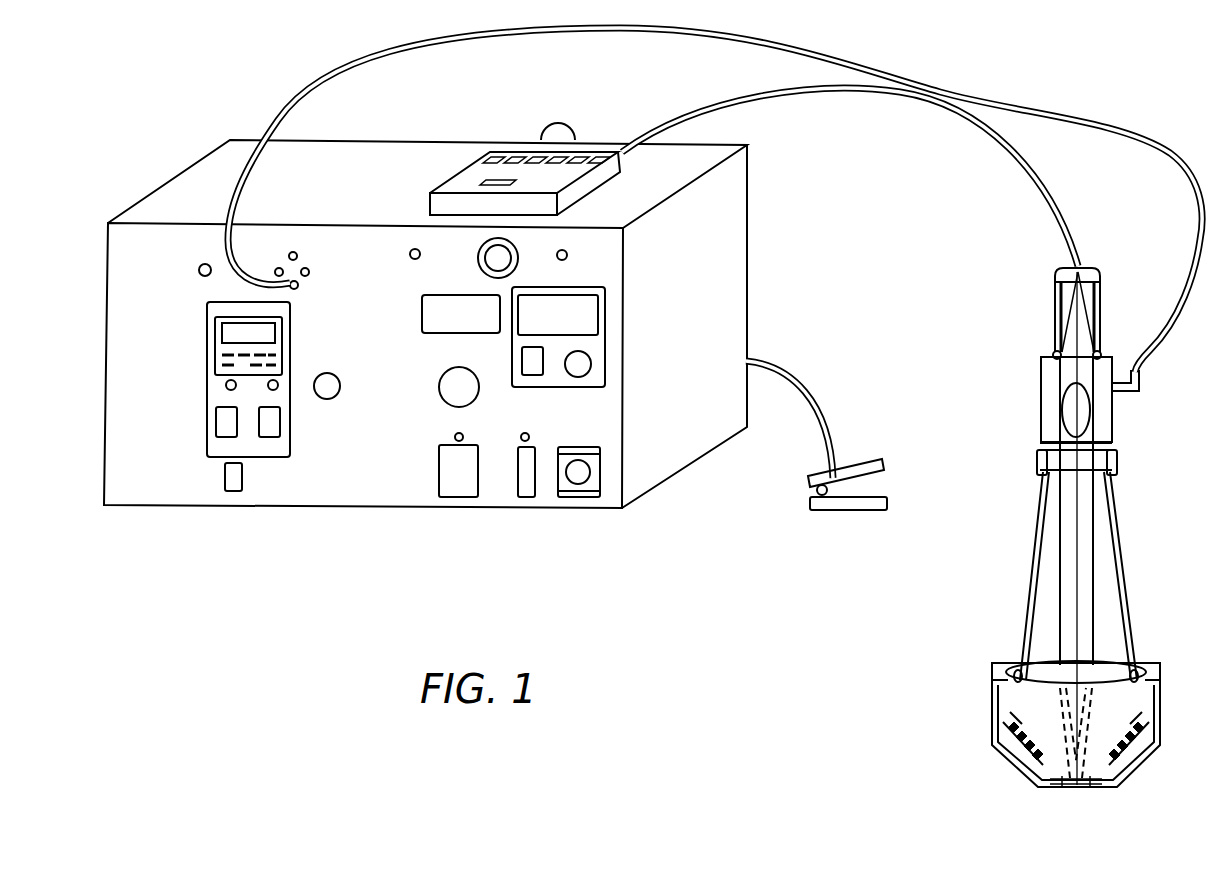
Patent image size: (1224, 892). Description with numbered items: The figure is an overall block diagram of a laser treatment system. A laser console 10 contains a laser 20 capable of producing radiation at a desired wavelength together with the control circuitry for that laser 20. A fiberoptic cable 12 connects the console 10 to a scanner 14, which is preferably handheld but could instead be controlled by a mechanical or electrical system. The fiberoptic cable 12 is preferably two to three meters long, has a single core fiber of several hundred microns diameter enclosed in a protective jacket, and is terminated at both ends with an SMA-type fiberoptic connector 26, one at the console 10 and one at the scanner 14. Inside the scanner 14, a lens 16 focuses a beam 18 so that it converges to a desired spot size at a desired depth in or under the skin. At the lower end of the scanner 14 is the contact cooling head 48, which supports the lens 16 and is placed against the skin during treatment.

The laser console 10 is at (256, 522).
The fiberoptic cable 12 is at (652, 38).
The scanner 14 is at (765, 438).
The lens 16 is at (1056, 713).
The beam 18 is at (1075, 568).
The laser 20 is at (311, 265).
The fiberoptic connector 26 is at (730, 223).
The contact cooling head 48 is at (990, 715).